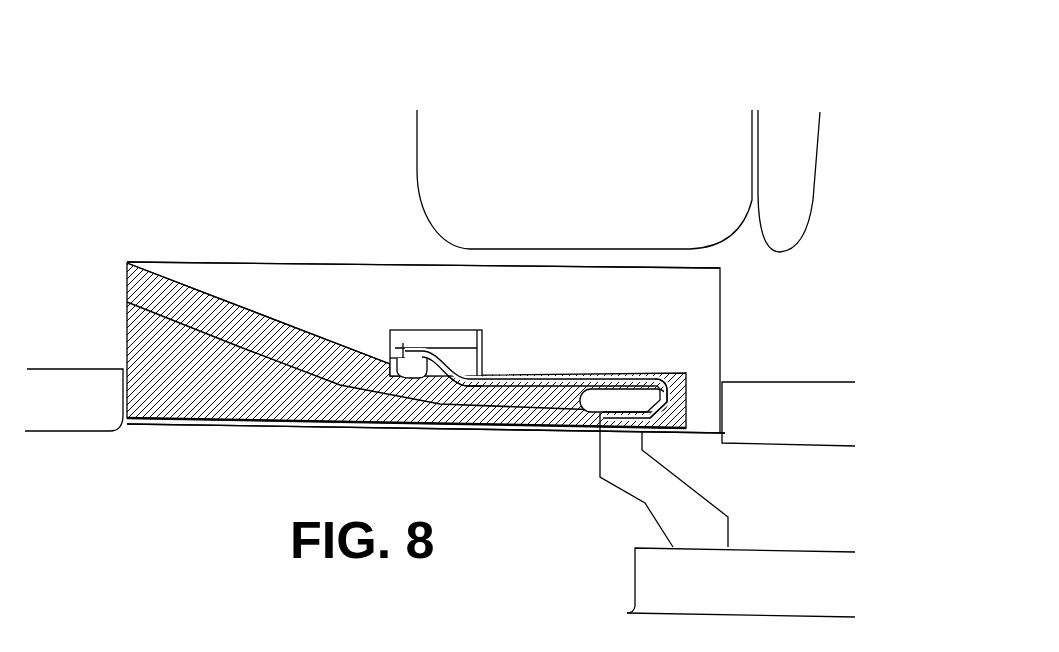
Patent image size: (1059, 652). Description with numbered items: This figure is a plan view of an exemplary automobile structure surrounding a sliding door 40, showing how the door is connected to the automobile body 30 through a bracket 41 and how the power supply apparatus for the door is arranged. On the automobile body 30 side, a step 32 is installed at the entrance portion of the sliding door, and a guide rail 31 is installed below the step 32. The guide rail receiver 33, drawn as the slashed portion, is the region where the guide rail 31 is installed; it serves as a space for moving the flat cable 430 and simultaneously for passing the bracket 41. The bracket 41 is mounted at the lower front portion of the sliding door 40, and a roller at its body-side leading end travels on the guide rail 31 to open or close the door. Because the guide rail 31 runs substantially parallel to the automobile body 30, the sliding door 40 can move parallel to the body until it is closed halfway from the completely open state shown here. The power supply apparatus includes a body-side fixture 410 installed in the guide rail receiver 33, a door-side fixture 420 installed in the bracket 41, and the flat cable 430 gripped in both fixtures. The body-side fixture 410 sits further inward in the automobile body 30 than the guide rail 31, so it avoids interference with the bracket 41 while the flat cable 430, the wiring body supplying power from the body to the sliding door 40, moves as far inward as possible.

The automobile body 30 is at (257, 77).
The guide rail 31 is at (292, 337).
The step 32 is at (222, 262).
The guide rail receiver 33 is at (236, 427).
The sliding door 40 is at (648, 575).
The bracket 41 is at (637, 487).
The body-side fixture 410 is at (443, 310).
The door-side fixture 420 is at (682, 376).
The flat cable 430 is at (613, 378).